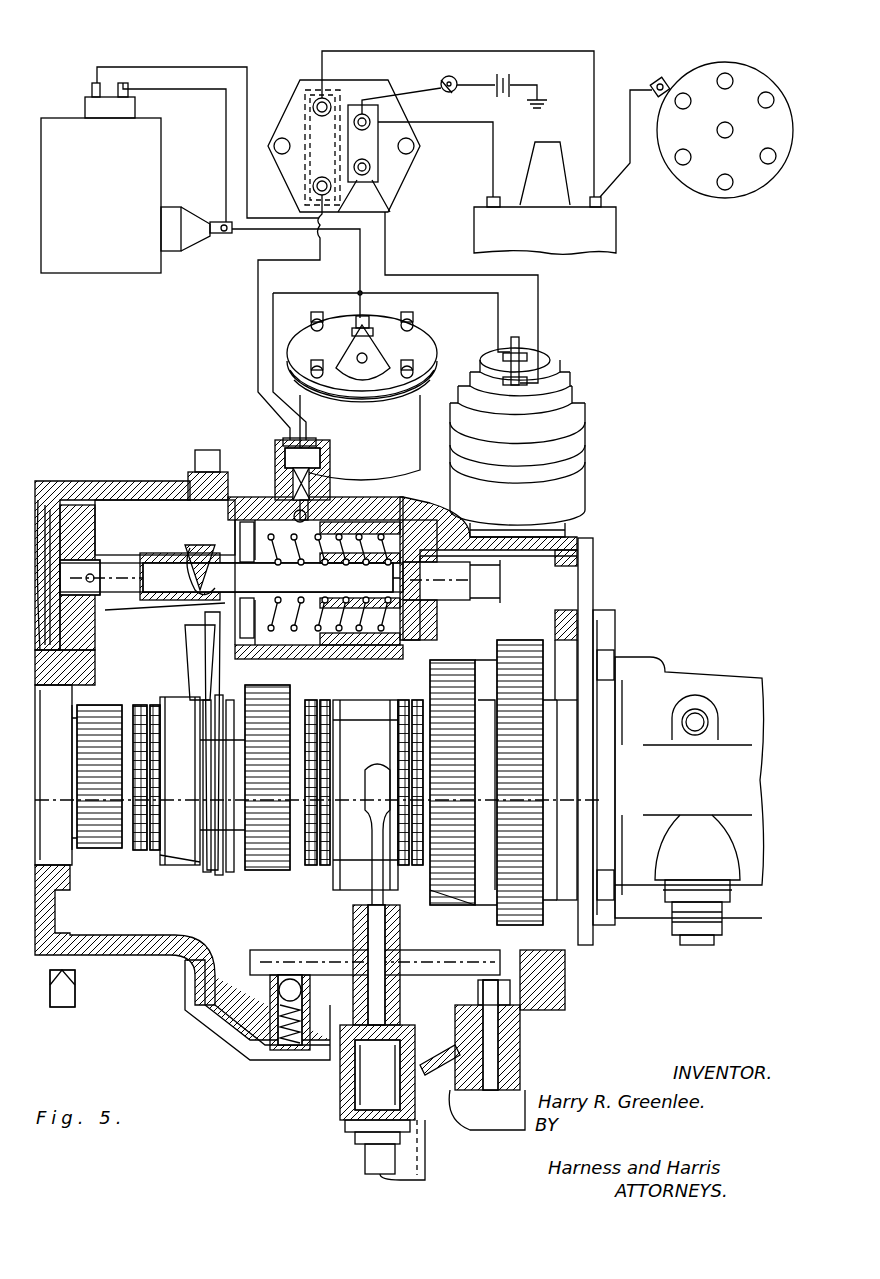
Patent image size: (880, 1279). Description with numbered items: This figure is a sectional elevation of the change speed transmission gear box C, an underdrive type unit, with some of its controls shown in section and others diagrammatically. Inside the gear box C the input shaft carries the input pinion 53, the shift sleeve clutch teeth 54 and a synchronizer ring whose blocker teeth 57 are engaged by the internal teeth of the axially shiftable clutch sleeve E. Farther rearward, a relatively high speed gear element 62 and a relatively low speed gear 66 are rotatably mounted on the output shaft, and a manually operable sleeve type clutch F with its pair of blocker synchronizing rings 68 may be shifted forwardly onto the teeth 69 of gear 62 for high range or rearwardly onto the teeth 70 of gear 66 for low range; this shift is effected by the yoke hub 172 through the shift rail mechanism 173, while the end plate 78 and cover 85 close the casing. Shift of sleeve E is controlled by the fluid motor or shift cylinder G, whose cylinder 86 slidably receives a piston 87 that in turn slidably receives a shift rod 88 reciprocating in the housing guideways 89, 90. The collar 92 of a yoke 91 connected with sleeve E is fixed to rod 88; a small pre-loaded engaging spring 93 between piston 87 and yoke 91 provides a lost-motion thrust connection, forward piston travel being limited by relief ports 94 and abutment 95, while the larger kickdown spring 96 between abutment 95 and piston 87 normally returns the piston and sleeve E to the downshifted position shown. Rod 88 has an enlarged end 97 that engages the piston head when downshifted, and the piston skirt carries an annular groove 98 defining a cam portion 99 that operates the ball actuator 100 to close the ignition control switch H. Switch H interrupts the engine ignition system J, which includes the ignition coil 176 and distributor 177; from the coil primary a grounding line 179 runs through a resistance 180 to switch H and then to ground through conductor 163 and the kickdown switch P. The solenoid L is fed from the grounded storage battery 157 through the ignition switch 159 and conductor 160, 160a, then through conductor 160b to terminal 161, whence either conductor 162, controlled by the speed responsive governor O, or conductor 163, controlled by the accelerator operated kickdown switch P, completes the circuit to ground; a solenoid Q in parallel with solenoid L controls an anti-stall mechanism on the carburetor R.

The ignition interruption grounding line 179 is at (500, 50).
The ignition switch 159 is at (443, 76).
The storage battery 157 is at (510, 80).
The distributor 177 is at (717, 65).
The resistance 180 is at (308, 122).
The conductor 160 is at (462, 96).
The ignition coil 176 is at (618, 231).
The conductor 163 is at (250, 230).
The terminal 161 is at (358, 293).
The conductor 162 is at (358, 293).
The conductor 160b is at (422, 298).
The conductor 160a is at (545, 301).
The cam portion 99 is at (332, 470).
The annular groove 98 is at (330, 495).
The cylinder 86 is at (395, 495).
The ball actuator 100 is at (285, 500).
The housing guideway 89 is at (100, 535).
The engaging spring 93 is at (222, 545).
The shift rod 88 is at (231, 576).
The kickdown spring 96 is at (318, 590).
The housing guideway 90 is at (436, 581).
The enlarged end 97 is at (468, 586).
The collar 92 is at (148, 607).
The yoke 91 is at (205, 640).
The shift sleeve clutch teeth 54 is at (140, 705).
The blocker teeth 57 is at (155, 705).
The input pinion 53 is at (112, 712).
The abutment 95 is at (265, 655).
The relief ports 94 is at (330, 660).
The piston 87 is at (415, 640).
The teeth 70 is at (420, 862).
The high speed gear element 62 is at (242, 875).
The teeth 69 is at (295, 875).
The blocker synchronizing rings 68 is at (310, 870).
The yoke hub 172 is at (428, 938).
The low speed gear 66 is at (452, 900).
The end plate 78 is at (518, 925).
The shift rail mechanism 173 is at (254, 945).
The engine ignition system J is at (318, 52).
The solenoid Q is at (84, 105).
The carburetor R is at (62, 270).
The kickdown switch P is at (196, 240).
The governor device O is at (448, 342).
The solenoid L is at (600, 481).
The ignition control switch H is at (264, 446).
The transmission gear box C is at (140, 480).
The shift cylinder G is at (432, 515).
The clutch sleeve E is at (158, 865).
The clutch sleeve F is at (343, 888).
The cover 85 is at (62, 485).